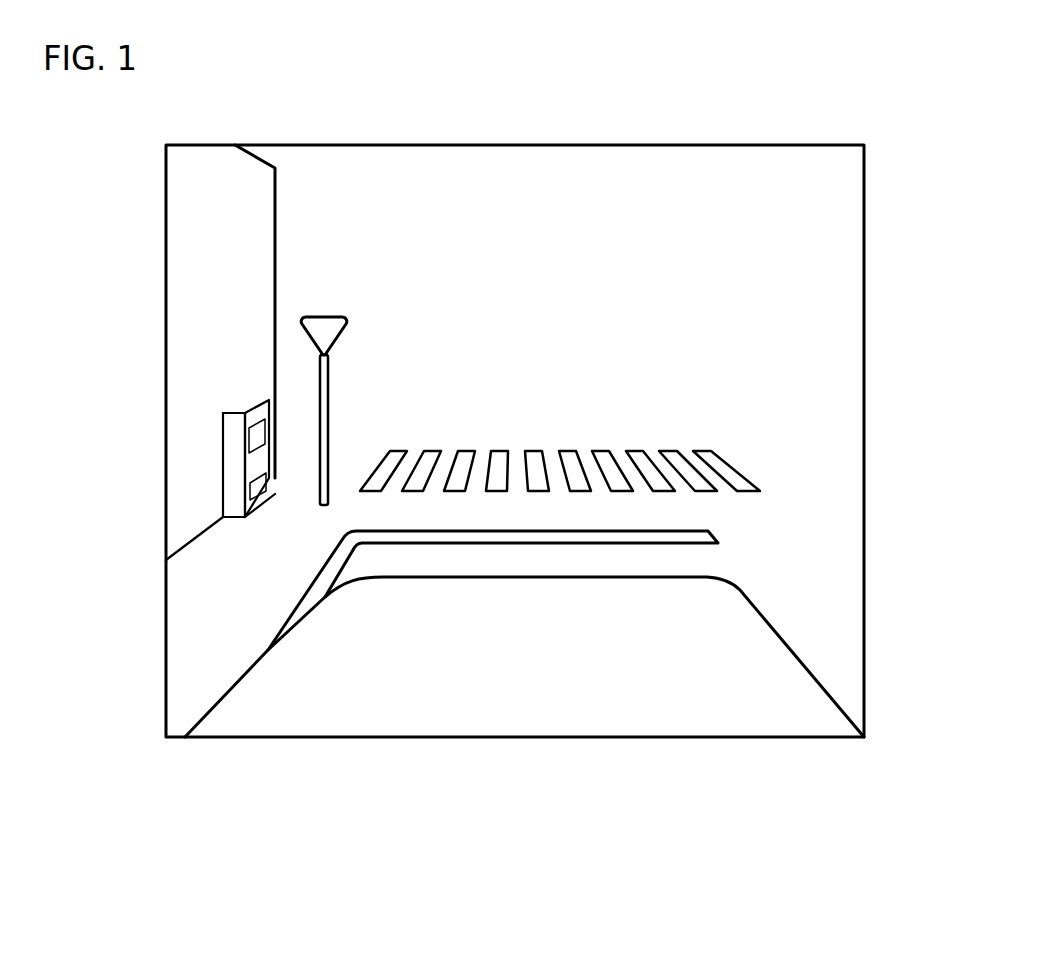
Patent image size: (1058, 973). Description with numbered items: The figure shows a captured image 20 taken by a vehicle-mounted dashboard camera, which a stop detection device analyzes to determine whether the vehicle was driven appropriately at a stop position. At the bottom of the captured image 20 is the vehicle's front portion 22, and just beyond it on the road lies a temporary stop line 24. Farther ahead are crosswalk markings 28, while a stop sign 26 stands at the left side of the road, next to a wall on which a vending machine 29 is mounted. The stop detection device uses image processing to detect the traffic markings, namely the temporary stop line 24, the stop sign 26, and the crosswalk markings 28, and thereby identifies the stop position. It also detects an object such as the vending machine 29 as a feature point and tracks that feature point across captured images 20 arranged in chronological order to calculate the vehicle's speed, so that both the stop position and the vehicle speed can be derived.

The captured image 20 is at (864, 317).
The vehicle's front portion 22 is at (728, 713).
The temporary stop line 24 is at (678, 535).
The stop sign 26 is at (313, 340).
The crosswalk markings 28 is at (682, 462).
The vending machine 29 is at (223, 457).